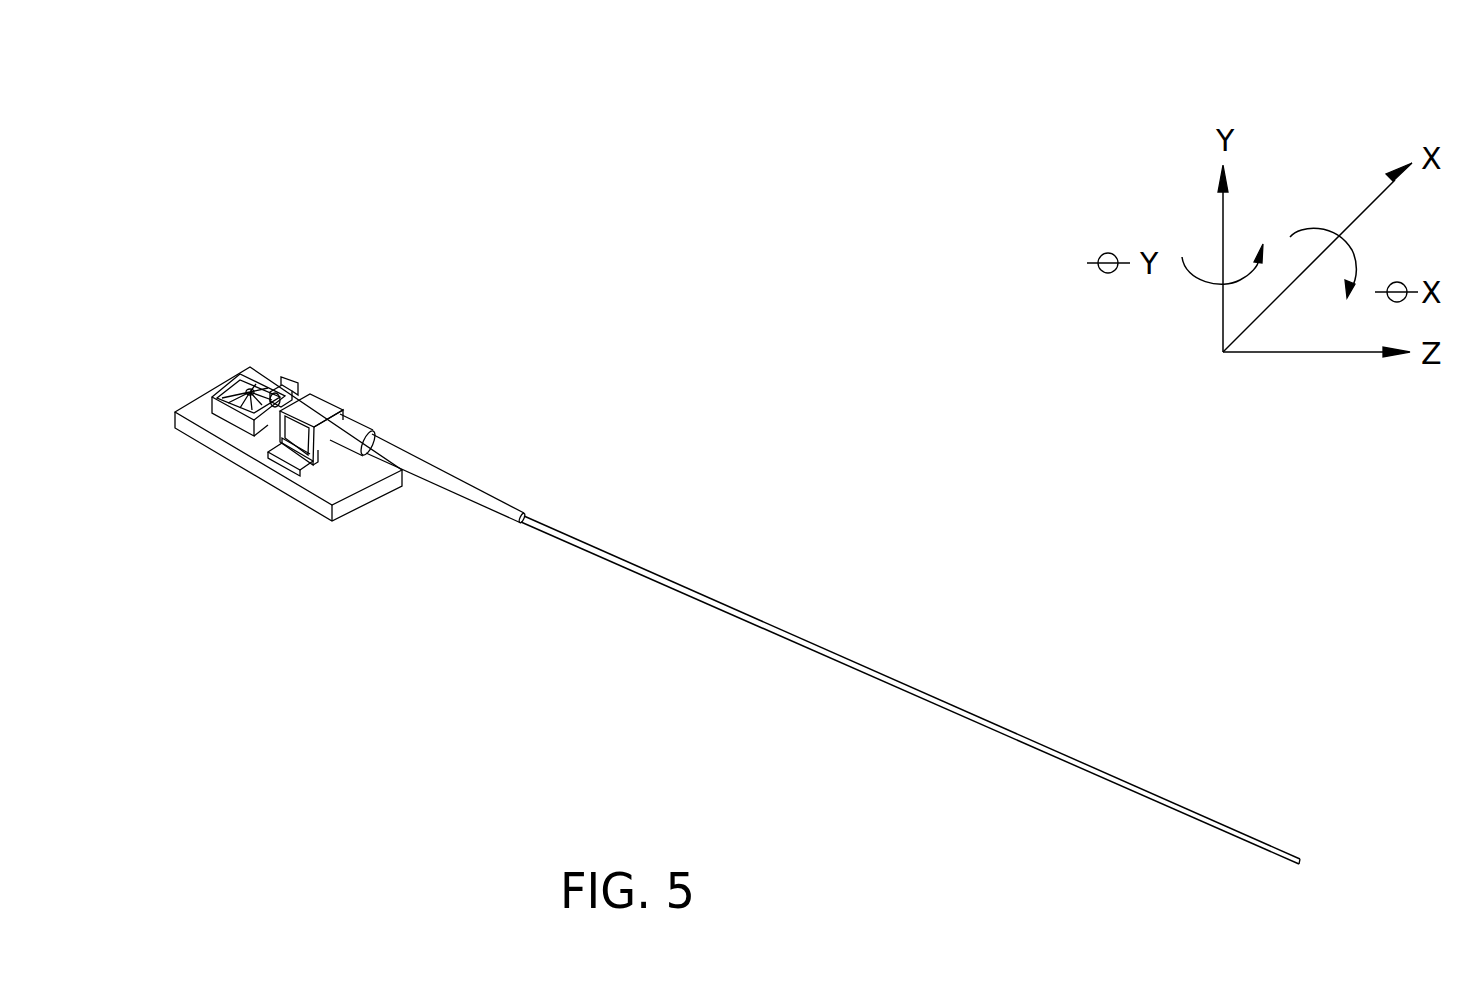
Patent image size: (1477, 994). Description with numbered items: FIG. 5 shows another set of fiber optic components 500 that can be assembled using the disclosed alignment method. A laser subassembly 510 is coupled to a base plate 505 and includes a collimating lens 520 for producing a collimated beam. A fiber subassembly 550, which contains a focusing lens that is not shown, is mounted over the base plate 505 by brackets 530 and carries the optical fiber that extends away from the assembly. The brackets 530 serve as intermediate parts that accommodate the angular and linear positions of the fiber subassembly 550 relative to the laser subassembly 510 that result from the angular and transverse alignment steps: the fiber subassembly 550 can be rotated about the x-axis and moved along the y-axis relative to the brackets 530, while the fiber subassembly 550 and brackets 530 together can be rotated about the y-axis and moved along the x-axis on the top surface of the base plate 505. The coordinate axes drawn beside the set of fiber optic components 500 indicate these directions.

The set of fiber optic components 500 is at (515, 195).
The base plate 505 is at (203, 448).
The laser subassembly 510 is at (237, 380).
The collimating lens 520 is at (277, 392).
The brackets 530 is at (323, 398).
The fiber subassembly 550 is at (365, 436).